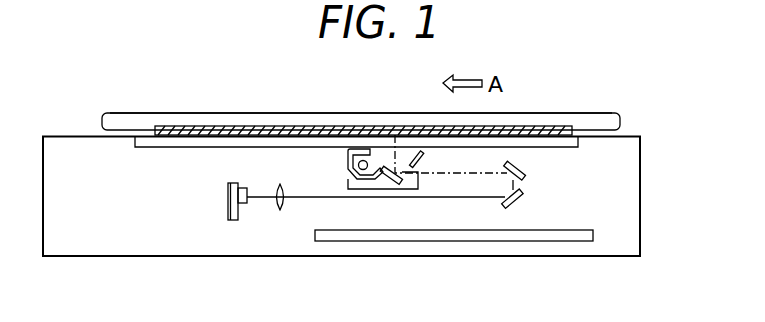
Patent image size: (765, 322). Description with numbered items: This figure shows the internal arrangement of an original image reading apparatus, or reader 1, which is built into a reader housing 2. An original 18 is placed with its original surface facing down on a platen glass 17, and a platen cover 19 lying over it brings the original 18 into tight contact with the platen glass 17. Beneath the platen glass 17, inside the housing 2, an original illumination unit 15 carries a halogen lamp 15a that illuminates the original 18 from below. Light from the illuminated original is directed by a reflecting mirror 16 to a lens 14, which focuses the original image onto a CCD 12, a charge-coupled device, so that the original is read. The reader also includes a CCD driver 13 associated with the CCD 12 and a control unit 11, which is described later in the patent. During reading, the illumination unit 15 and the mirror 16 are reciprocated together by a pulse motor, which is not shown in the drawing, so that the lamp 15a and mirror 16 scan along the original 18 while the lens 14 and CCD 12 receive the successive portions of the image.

The original image reading apparatus 1 is at (632, 121).
The reader housing 2 is at (641, 210).
The control unit 11 is at (450, 242).
The CCD 12 is at (243, 204).
The CCD driver 13 is at (230, 202).
The lens 14 is at (288, 203).
The original illumination unit 15 is at (348, 167).
The halogen lamp 15a is at (368, 161).
The reflecting mirror 16 is at (526, 184).
The platen glass 17 is at (160, 148).
The original 18 is at (257, 126).
The platen cover 19 is at (328, 114).